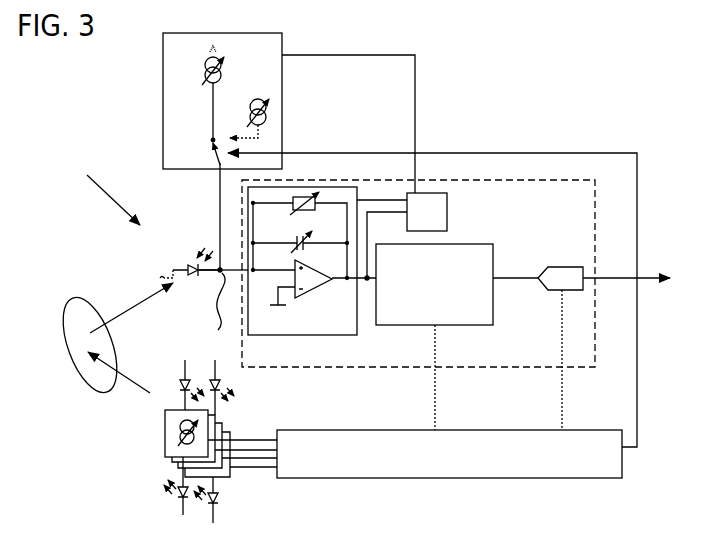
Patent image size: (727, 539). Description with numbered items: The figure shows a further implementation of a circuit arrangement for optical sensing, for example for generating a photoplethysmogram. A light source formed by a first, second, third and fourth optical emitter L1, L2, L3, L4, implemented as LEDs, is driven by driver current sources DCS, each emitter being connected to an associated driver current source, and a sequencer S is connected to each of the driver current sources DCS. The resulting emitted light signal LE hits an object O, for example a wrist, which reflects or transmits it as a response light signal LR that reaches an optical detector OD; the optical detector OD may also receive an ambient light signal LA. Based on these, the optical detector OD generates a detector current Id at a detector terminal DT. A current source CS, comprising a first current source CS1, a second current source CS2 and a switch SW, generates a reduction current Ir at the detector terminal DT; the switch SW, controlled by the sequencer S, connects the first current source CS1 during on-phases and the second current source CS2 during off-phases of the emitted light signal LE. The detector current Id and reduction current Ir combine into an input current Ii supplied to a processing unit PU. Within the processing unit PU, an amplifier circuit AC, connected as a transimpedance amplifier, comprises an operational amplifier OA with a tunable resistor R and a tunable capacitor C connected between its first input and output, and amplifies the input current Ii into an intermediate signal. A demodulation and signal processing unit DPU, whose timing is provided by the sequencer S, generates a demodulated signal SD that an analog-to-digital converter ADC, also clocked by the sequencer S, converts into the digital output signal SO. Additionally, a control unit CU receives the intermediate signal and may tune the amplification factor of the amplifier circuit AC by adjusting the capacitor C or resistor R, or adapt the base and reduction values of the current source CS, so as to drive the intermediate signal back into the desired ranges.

The current source CS is at (222, 101).
The first current source CS1 is at (197, 92).
The second current source CS2 is at (251, 105).
The switch SW is at (199, 151).
The reduction current Ir is at (213, 216).
The input current Ii is at (233, 262).
The detector current Id is at (209, 280).
The optical detector OD is at (189, 262).
The detector terminal DT is at (225, 309).
The processing unit PU is at (418, 305).
The amplifier circuit AC is at (312, 261).
The resistor R is at (300, 235).
The capacitor C is at (300, 240).
The operational amplifier OA is at (314, 285).
The control unit CU is at (402, 236).
The demodulation and signal processing unit DPU is at (434, 337).
The demodulated signal SD is at (515, 269).
The analog-to-digital converter ADC is at (560, 348).
The output signal SO is at (628, 267).
The sequencer S is at (449, 454).
The driver current sources DCS is at (160, 446).
The first optical emitter L1 is at (182, 385).
The second optical emitter L2 is at (224, 387).
The third optical emitter L3 is at (169, 487).
The fourth optical emitter L4 is at (217, 500).
The ambient light signal LA is at (113, 198).
The object O is at (90, 344).
The response light signal LR is at (131, 308).
The emitted light signal LE is at (119, 381).